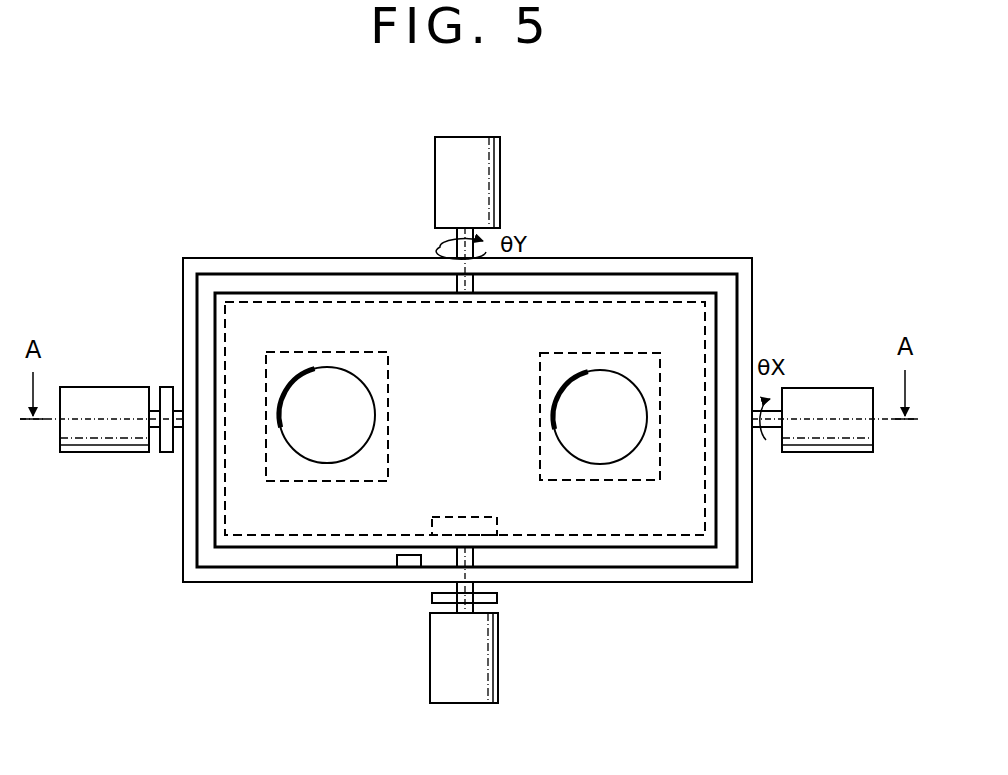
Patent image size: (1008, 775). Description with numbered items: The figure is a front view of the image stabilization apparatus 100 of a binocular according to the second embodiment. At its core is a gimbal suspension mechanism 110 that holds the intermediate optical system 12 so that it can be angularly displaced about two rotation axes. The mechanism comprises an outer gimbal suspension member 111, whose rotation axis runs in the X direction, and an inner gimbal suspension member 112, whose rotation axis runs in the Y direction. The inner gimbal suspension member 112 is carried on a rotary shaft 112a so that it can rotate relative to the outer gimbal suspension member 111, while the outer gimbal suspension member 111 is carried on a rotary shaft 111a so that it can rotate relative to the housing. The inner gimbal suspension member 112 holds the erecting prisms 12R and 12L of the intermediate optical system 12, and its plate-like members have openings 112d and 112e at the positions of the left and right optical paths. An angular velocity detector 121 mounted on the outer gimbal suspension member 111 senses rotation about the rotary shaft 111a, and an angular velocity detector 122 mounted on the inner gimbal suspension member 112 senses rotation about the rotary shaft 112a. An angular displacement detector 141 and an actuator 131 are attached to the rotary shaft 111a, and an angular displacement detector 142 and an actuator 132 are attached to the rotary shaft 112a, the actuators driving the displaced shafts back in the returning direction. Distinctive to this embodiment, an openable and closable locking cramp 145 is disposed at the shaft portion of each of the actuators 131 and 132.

The image stabilization apparatus 100 is at (606, 224).
The gimbal suspension mechanism 110 is at (855, 256).
The outer gimbal suspension member 111 is at (745, 272).
The inner gimbal suspension member 112 is at (660, 300).
The rotary shaft 112a is at (457, 286).
The opening 112d is at (600, 445).
The opening 112e is at (326, 447).
The rotary shaft 111a is at (155, 410).
The intermediate optical system 12 is at (463, 396).
The erecting prism 12R is at (380, 401).
The erecting prism 12L is at (547, 396).
The angular velocity detector 121 is at (405, 558).
The angular velocity detector 122 is at (466, 517).
The actuator 131 is at (80, 453).
The actuator 132 is at (432, 648).
The angular displacement detector 141 is at (822, 453).
The angular displacement detector 142 is at (500, 180).
The openable and closable locking cramp 145 is at (167, 453).